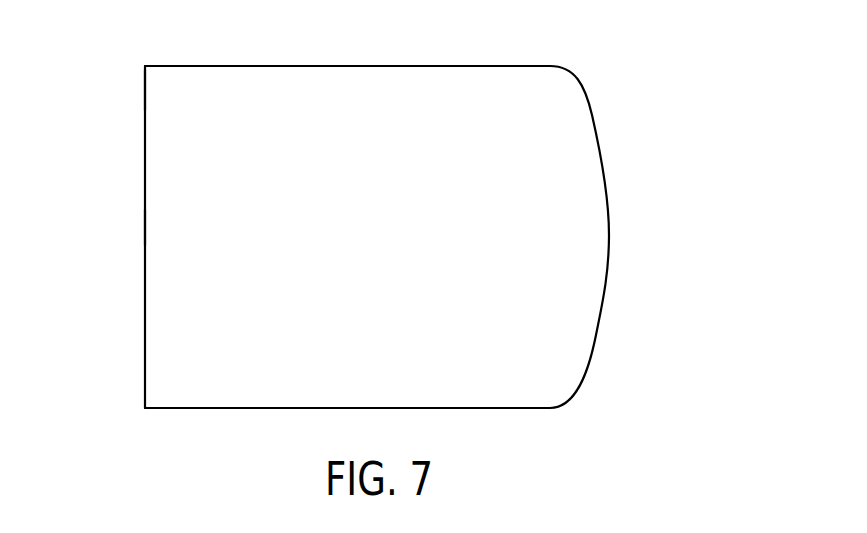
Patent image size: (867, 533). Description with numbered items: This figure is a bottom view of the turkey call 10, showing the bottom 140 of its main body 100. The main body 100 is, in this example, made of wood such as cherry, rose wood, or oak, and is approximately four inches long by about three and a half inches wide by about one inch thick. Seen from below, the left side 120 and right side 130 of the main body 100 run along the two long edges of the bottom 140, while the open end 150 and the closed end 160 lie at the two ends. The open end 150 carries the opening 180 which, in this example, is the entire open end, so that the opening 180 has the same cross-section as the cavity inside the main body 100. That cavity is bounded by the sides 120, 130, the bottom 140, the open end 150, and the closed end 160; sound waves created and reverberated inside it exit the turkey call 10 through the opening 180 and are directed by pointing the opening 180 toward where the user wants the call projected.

The turkey call 10 is at (606, 80).
The main body 100 is at (558, 185).
The left side 120 is at (462, 408).
The right side 130 is at (490, 66).
The bottom 140 is at (262, 313).
The open end 150 is at (145, 90).
The closed end 160 is at (607, 291).
The opening 180 is at (145, 227).